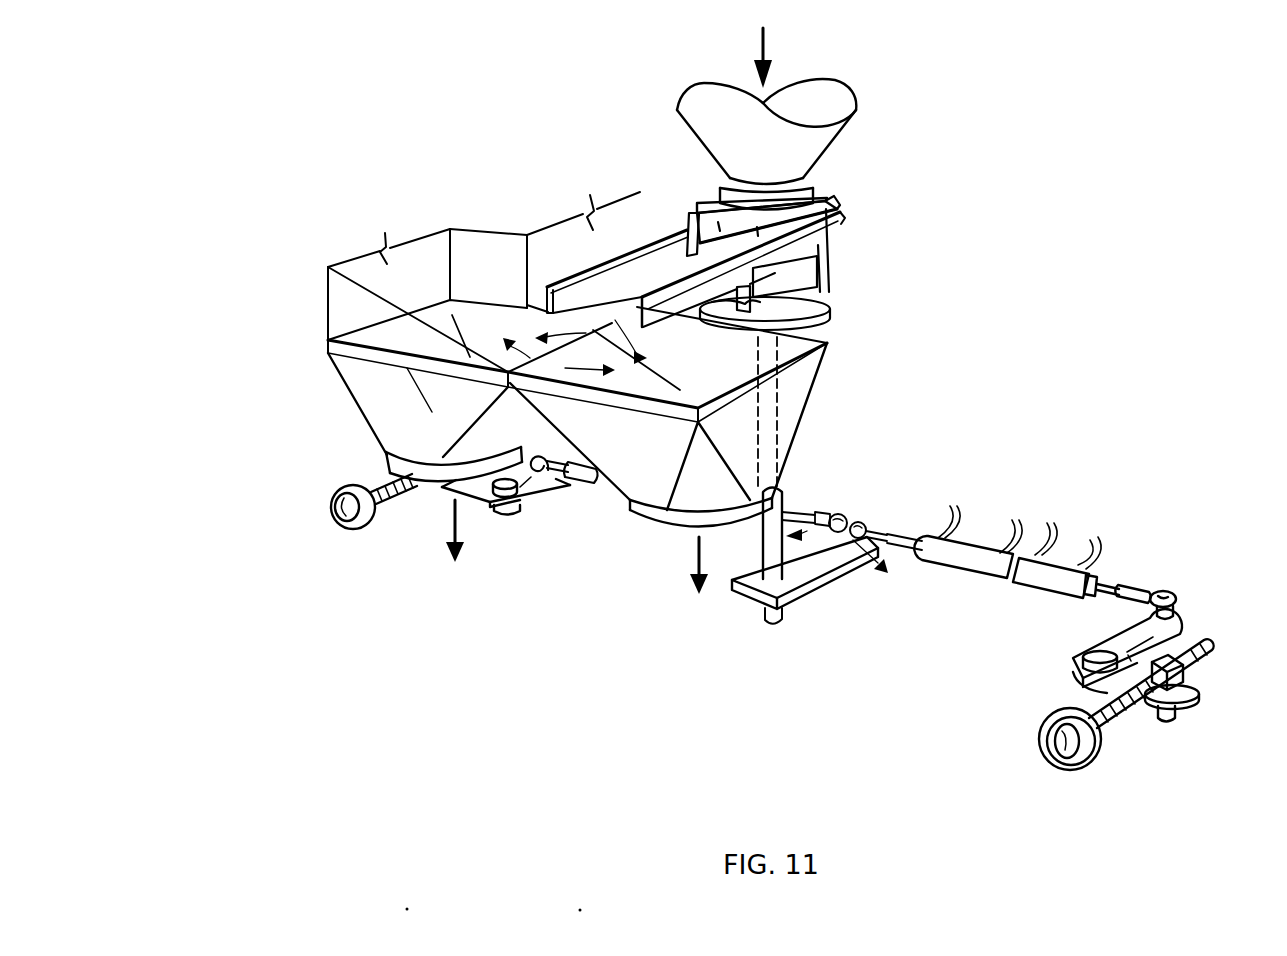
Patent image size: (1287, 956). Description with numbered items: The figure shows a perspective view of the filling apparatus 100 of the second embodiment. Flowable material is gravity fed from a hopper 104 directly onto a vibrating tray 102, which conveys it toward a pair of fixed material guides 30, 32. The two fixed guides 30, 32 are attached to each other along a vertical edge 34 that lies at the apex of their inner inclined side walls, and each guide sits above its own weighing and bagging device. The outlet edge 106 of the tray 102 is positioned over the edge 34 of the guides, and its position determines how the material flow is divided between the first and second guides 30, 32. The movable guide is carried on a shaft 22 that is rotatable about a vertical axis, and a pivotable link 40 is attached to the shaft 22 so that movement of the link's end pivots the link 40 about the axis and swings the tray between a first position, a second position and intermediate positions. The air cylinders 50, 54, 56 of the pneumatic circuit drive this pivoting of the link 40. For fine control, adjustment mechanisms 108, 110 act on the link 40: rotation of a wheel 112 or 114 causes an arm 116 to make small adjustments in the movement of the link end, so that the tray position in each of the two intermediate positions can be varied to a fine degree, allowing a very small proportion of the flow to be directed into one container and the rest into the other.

The shaft 22 is at (784, 520).
The first fixed material guide 30 is at (380, 398).
The second fixed material guide 32 is at (810, 372).
The vertical edge 34 is at (328, 267).
The pivotable link 40 is at (805, 563).
The air cylinder 50 is at (594, 484).
The air cylinder 54 is at (963, 550).
The air cylinder 56 is at (1052, 568).
The apparatus 100 is at (474, 695).
The vibrating tray 102 is at (583, 280).
The hopper 104 is at (693, 108).
The outlet edge 106 is at (597, 320).
The adjustment mechanism 108 is at (961, 708).
The adjustment mechanism 110 is at (401, 538).
The wheel 112 is at (1085, 760).
The wheel 114 is at (330, 512).
The arm 116 is at (1178, 617).